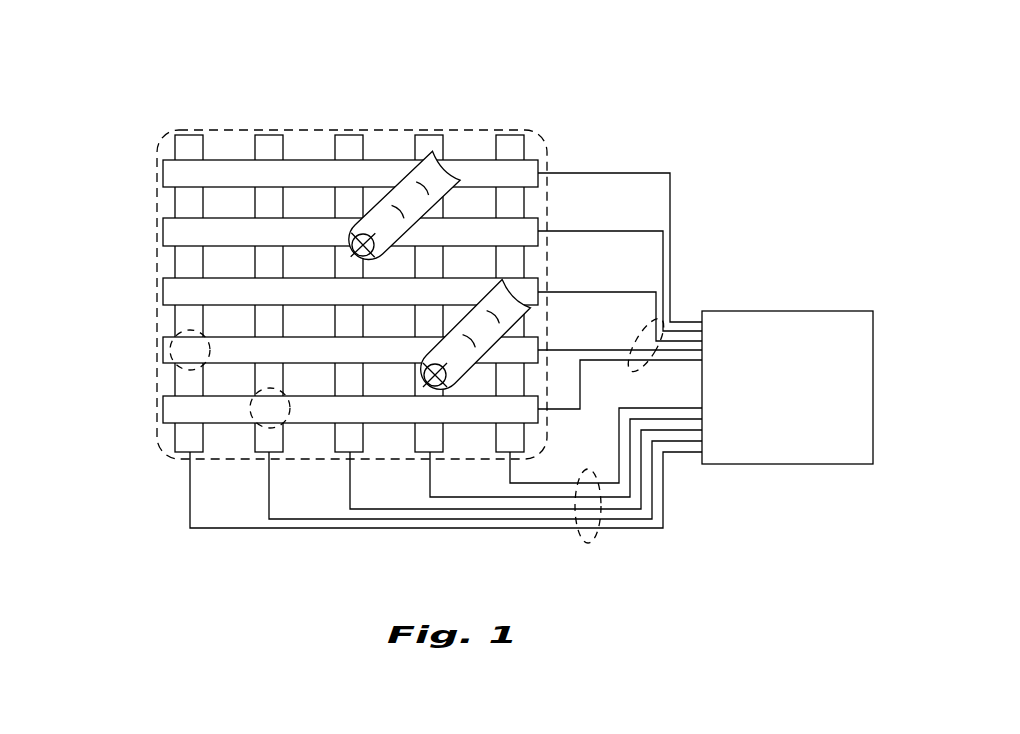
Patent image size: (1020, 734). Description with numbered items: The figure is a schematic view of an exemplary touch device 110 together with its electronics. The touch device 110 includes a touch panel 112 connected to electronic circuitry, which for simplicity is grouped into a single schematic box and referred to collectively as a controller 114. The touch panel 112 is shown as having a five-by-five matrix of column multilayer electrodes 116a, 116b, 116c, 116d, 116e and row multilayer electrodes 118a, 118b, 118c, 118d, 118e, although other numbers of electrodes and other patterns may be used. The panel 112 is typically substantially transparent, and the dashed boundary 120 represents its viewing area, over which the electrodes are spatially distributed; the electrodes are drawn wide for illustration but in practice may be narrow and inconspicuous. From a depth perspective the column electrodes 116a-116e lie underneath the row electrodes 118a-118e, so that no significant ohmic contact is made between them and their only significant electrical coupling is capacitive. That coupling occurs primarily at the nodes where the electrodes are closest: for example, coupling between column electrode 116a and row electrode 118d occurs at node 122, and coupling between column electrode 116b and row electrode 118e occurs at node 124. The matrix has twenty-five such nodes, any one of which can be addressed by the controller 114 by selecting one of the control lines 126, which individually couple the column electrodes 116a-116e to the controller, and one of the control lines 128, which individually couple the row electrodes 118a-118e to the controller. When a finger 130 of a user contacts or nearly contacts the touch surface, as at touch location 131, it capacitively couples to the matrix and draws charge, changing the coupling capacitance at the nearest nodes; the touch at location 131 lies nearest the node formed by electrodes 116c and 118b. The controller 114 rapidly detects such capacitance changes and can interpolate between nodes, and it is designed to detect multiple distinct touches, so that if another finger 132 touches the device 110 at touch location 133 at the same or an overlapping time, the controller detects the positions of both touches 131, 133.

The touch device 110 is at (704, 71).
The touch panel 112 is at (153, 127).
The controller 114 is at (806, 401).
The column multilayer electrode 116a is at (189, 142).
The column multilayer electrode 116b is at (269, 142).
The column multilayer electrode 116c is at (349, 142).
The column multilayer electrode 116d is at (429, 142).
The column multilayer electrode 116e is at (510, 142).
The row multilayer electrode 118a is at (170, 173).
The row multilayer electrode 118b is at (170, 232).
The row multilayer electrode 118c is at (170, 291).
The row multilayer electrode 118d is at (170, 350).
The row multilayer electrode 118e is at (170, 409).
The boundary 120 is at (548, 146).
The node 122 is at (188, 332).
The node 124 is at (268, 428).
The control lines 126 is at (592, 543).
The control lines 128 is at (674, 319).
The finger 130 is at (420, 175).
The touch location 131 is at (360, 238).
The finger 132 is at (510, 300).
The touch location 133 is at (432, 384).